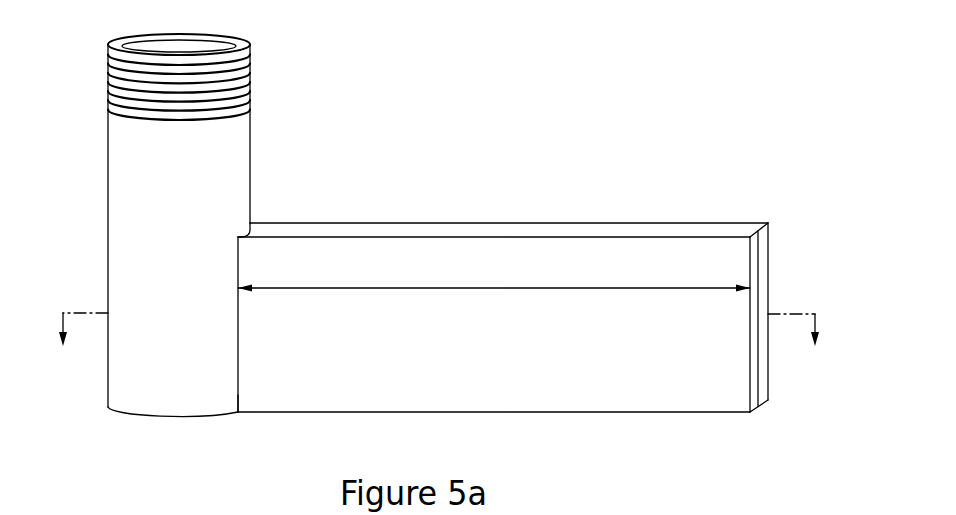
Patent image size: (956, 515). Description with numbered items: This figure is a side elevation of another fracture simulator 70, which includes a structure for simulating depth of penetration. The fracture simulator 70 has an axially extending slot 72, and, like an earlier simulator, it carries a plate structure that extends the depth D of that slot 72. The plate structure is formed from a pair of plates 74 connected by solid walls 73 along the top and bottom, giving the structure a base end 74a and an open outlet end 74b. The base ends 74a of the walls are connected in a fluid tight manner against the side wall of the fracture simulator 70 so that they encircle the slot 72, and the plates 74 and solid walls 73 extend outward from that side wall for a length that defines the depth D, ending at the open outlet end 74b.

The fracture simulator 70 is at (450, 242).
The axially extending slot 72 is at (758, 252).
The solid walls 73 is at (515, 228).
The plates 74 is at (410, 253).
The base end 74a is at (238, 397).
The open outlet end 74b is at (758, 292).